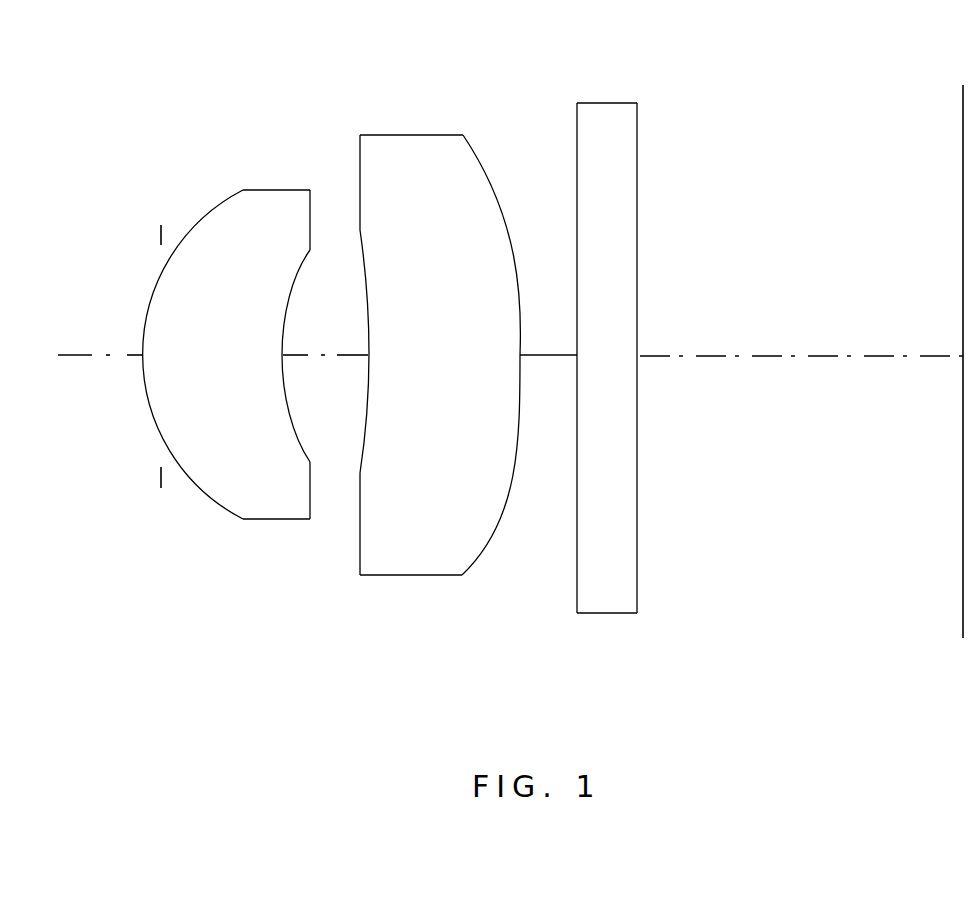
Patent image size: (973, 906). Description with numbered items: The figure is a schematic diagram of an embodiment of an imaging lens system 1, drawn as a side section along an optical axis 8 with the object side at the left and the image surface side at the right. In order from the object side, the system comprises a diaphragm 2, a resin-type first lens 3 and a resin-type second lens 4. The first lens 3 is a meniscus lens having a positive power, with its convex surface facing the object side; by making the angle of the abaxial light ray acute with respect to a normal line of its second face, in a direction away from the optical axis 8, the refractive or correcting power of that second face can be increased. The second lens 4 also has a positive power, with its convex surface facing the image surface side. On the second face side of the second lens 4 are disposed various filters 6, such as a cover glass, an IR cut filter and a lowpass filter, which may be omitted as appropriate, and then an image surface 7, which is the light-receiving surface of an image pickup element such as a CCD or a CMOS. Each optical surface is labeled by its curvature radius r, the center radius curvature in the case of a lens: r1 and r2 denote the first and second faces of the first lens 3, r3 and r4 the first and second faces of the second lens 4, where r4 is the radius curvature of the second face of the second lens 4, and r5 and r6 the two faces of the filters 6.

The imaging lens system 1 is at (90, 112).
The diaphragm 2 is at (161, 231).
The first lens 3 is at (250, 190).
The second lens 4 is at (397, 135).
The various filters 6 is at (577, 148).
The image surface 7 is at (963, 150).
The optical axis 8 is at (84, 352).
The curvature radius of the first face of the first lens r1 is at (140, 355).
The curvature radius of the second face of the first lens r2 is at (291, 354).
The curvature radius of the first face of the second lens r3 is at (368, 356).
The radius curvature of the second face of the second lens r4 is at (520, 355).
The curvature radius of the first face of the filters r5 is at (577, 357).
The curvature radius of the second face of the filters r6 is at (638, 357).